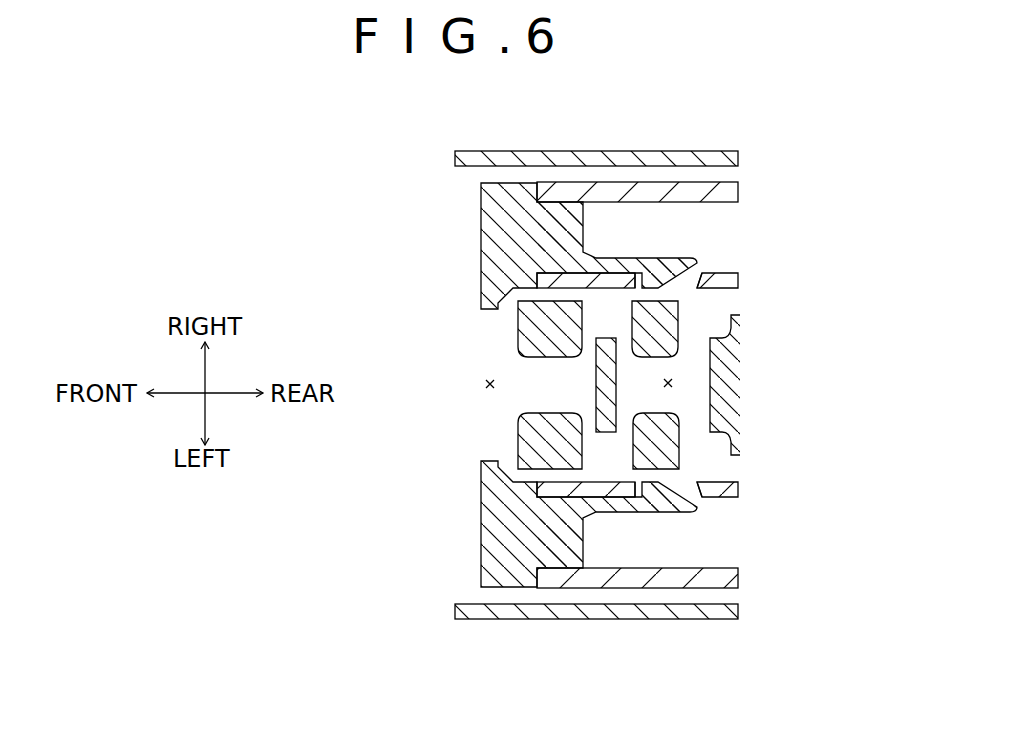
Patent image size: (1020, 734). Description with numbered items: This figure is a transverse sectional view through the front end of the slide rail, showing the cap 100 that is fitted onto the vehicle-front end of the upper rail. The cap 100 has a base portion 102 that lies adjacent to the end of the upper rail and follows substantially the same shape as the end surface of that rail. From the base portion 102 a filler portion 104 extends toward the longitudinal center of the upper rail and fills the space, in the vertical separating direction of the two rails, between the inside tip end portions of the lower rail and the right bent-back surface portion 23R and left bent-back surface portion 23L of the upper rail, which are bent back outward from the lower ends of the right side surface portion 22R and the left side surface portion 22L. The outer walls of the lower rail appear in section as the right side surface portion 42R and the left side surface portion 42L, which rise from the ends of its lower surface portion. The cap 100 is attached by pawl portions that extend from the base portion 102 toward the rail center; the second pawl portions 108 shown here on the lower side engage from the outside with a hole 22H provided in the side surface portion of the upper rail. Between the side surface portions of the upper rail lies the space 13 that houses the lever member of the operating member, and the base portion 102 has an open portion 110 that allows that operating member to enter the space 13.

The cap 100 is at (578, 386).
The base portion 102 is at (508, 249).
The filler portion 104 is at (560, 222).
The second pawl portion 108 is at (668, 260).
The open portion 110 is at (490, 384).
The space 13 is at (668, 383).
The right side surface portion 42R is at (650, 164).
The left side surface portion 42L is at (652, 612).
The right bent-back surface portion 23R is at (702, 196).
The left bent-back surface portion 23L is at (703, 583).
The right side surface portion 22R is at (716, 282).
The left side surface portion 22L is at (718, 490).
The hole 22H is at (655, 285).